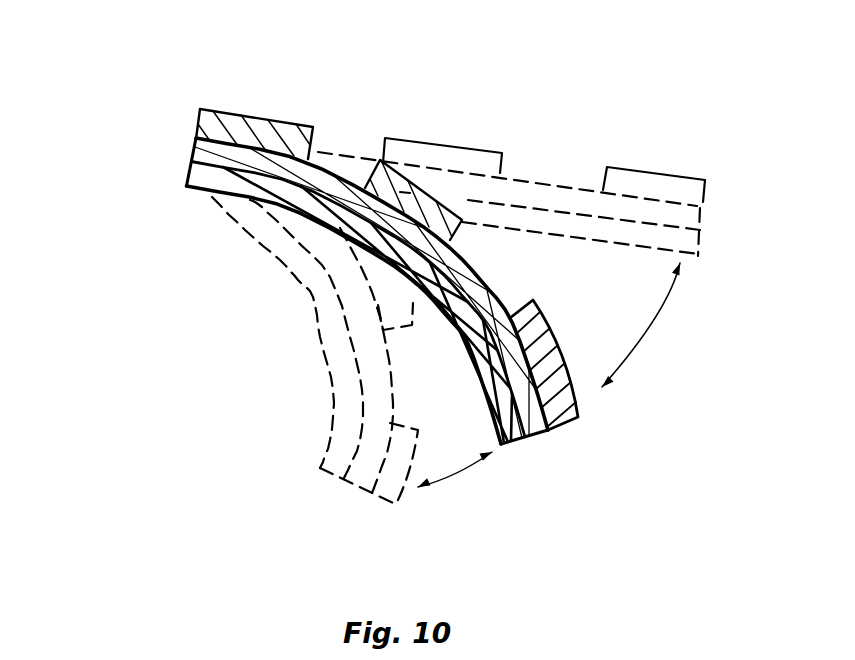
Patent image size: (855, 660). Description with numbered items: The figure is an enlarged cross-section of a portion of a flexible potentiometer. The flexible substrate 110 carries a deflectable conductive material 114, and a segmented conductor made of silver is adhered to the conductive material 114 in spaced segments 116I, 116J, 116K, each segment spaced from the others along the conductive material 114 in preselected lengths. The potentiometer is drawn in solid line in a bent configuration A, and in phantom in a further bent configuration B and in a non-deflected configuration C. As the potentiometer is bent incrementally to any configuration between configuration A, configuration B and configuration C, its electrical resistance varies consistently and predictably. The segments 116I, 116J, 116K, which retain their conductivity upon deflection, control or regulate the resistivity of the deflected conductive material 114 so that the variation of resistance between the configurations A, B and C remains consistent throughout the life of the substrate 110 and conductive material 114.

The substrate 110 is at (195, 178).
The conductive material 114 is at (540, 437).
The segment of segmented conductor 116I is at (263, 119).
The segment of segmented conductor 116J is at (372, 158).
The segment of segmented conductor 116K is at (577, 420).
The bent configuration A is at (593, 478).
The further bent configuration B is at (327, 498).
The non-deflected configuration C is at (712, 257).